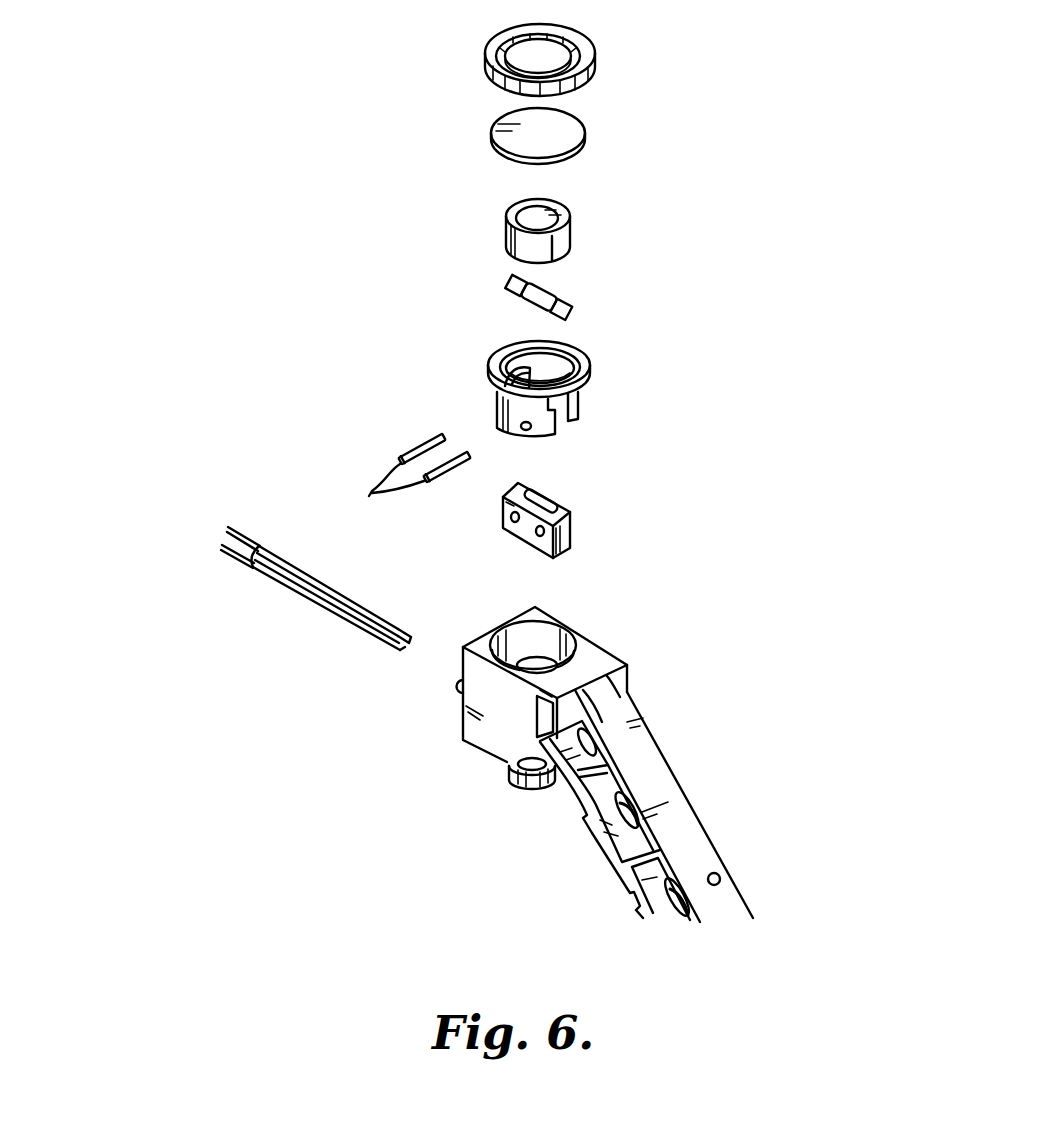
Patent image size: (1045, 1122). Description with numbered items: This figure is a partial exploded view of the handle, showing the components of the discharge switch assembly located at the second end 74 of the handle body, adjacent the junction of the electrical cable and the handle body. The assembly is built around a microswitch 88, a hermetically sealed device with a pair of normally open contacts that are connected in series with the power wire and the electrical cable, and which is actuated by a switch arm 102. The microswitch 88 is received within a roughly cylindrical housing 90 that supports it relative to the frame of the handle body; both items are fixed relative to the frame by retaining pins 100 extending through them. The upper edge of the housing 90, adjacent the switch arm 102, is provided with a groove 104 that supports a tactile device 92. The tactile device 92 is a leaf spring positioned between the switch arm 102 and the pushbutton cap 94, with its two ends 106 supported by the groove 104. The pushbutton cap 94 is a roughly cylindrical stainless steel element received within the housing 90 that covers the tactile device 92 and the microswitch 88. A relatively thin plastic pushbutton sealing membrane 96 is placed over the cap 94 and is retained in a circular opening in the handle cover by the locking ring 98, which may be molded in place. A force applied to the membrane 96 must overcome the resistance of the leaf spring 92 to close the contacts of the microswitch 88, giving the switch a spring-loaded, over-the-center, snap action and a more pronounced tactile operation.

The second end of handle body 74 is at (610, 653).
The microswitch 88 is at (601, 502).
The housing 90 is at (530, 370).
The tactile device 92 is at (545, 285).
The pushbutton cap 94 is at (510, 212).
The pushbutton sealing membrane 96 is at (567, 133).
The locking ring 98 is at (596, 58).
The retaining pins 100 is at (405, 480).
The switch arm 102 is at (530, 492).
The groove 104 is at (503, 357).
The ends of leaf spring 106 is at (510, 285).